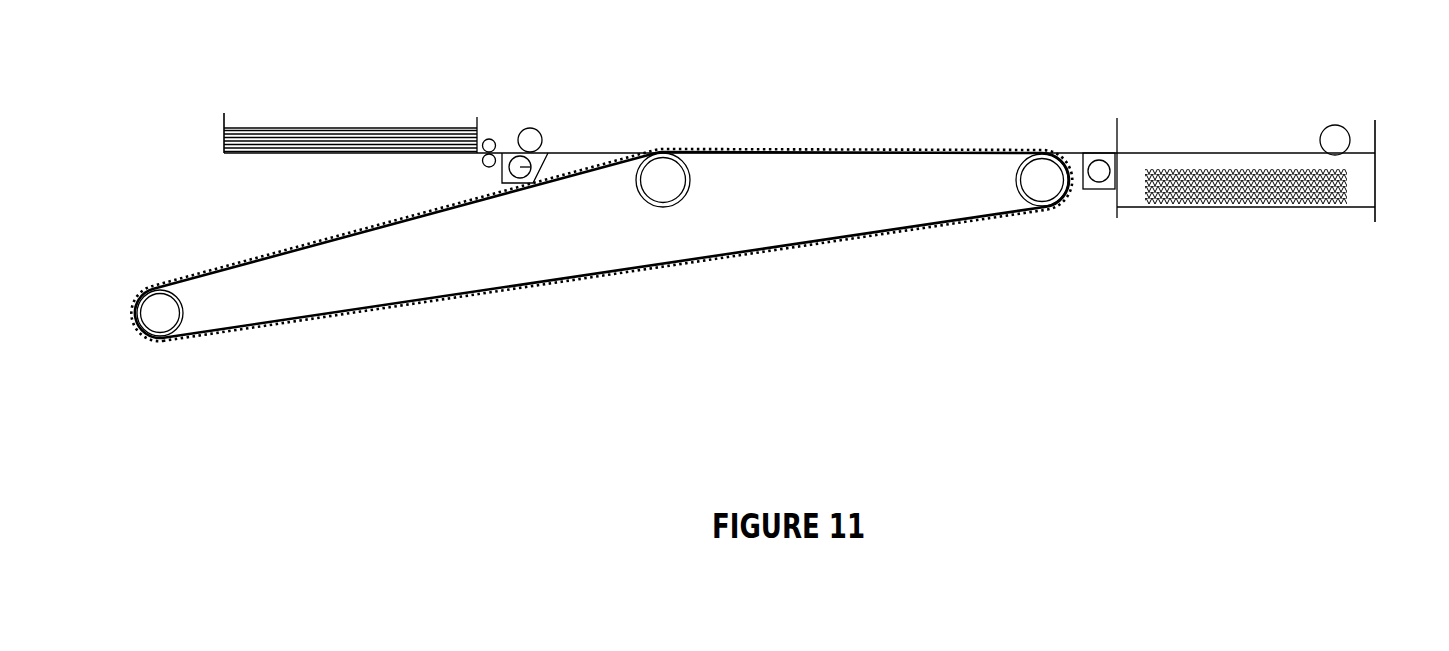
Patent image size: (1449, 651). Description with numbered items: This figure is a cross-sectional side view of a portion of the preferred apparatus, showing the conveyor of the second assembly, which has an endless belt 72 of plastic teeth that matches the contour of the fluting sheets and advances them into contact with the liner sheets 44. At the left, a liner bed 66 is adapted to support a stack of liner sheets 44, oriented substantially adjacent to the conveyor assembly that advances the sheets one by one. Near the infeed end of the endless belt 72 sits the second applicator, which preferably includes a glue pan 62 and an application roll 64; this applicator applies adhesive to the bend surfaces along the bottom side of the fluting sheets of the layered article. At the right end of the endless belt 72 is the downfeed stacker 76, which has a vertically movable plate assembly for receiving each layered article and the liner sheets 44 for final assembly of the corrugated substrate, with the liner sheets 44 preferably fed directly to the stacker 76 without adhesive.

The liner bed 66 is at (223, 138).
The liner sheets 44 is at (363, 130).
The glue pan 62 is at (502, 183).
The application roll 64 is at (535, 166).
The endless belt 72 is at (485, 292).
The downfeed stacker 76 is at (1377, 190).